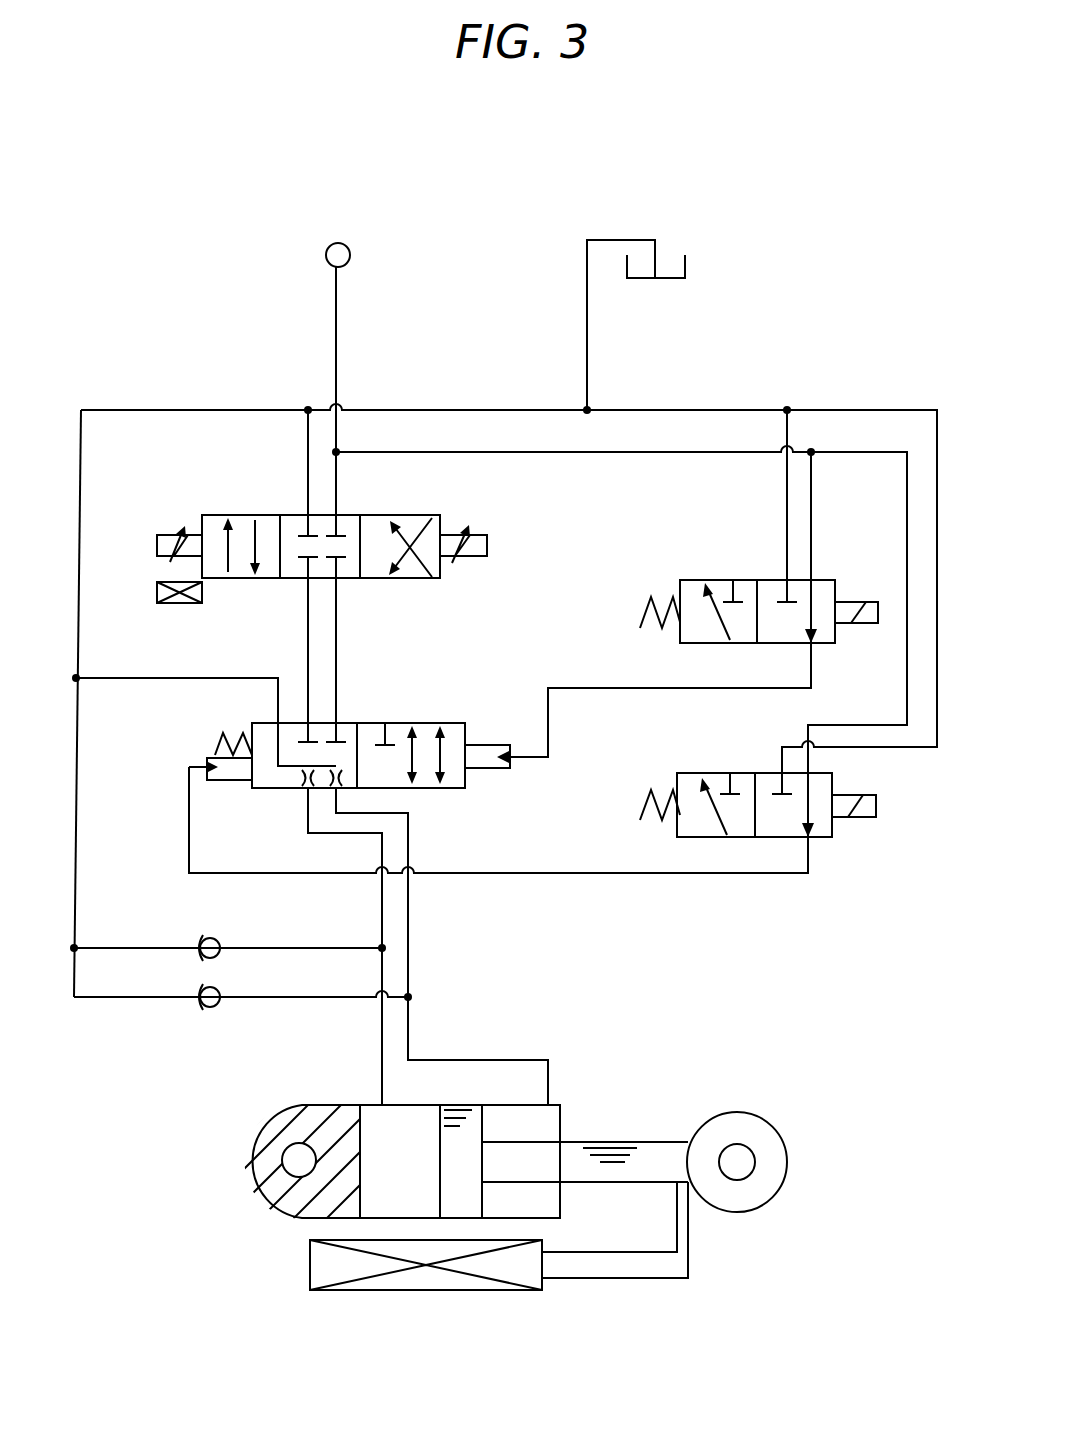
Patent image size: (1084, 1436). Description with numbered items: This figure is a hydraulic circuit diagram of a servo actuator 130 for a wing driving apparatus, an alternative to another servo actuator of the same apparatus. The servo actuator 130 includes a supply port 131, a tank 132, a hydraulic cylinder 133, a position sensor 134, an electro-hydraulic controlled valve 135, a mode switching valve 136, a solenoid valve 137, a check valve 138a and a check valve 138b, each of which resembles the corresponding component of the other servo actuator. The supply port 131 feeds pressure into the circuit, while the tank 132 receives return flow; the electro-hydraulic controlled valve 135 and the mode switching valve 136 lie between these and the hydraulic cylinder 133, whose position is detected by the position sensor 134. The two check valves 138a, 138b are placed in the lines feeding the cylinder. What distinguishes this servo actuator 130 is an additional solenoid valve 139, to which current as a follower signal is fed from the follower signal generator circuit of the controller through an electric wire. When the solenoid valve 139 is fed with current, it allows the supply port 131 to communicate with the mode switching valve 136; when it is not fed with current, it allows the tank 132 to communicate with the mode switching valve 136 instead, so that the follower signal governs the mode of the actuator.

The servo actuator 130 is at (478, 236).
The supply port 131 is at (346, 244).
The tank 132 is at (686, 270).
The hydraulic cylinder 133 is at (603, 1098).
The position sensor 134 is at (415, 1285).
The electro-hydraulic controlled valve 135 is at (428, 596).
The mode switching valve 136 is at (448, 708).
The solenoid valve 137 is at (733, 565).
The check valve 138a is at (214, 940).
The check valve 138b is at (215, 1008).
The solenoid valve 139 is at (832, 860).